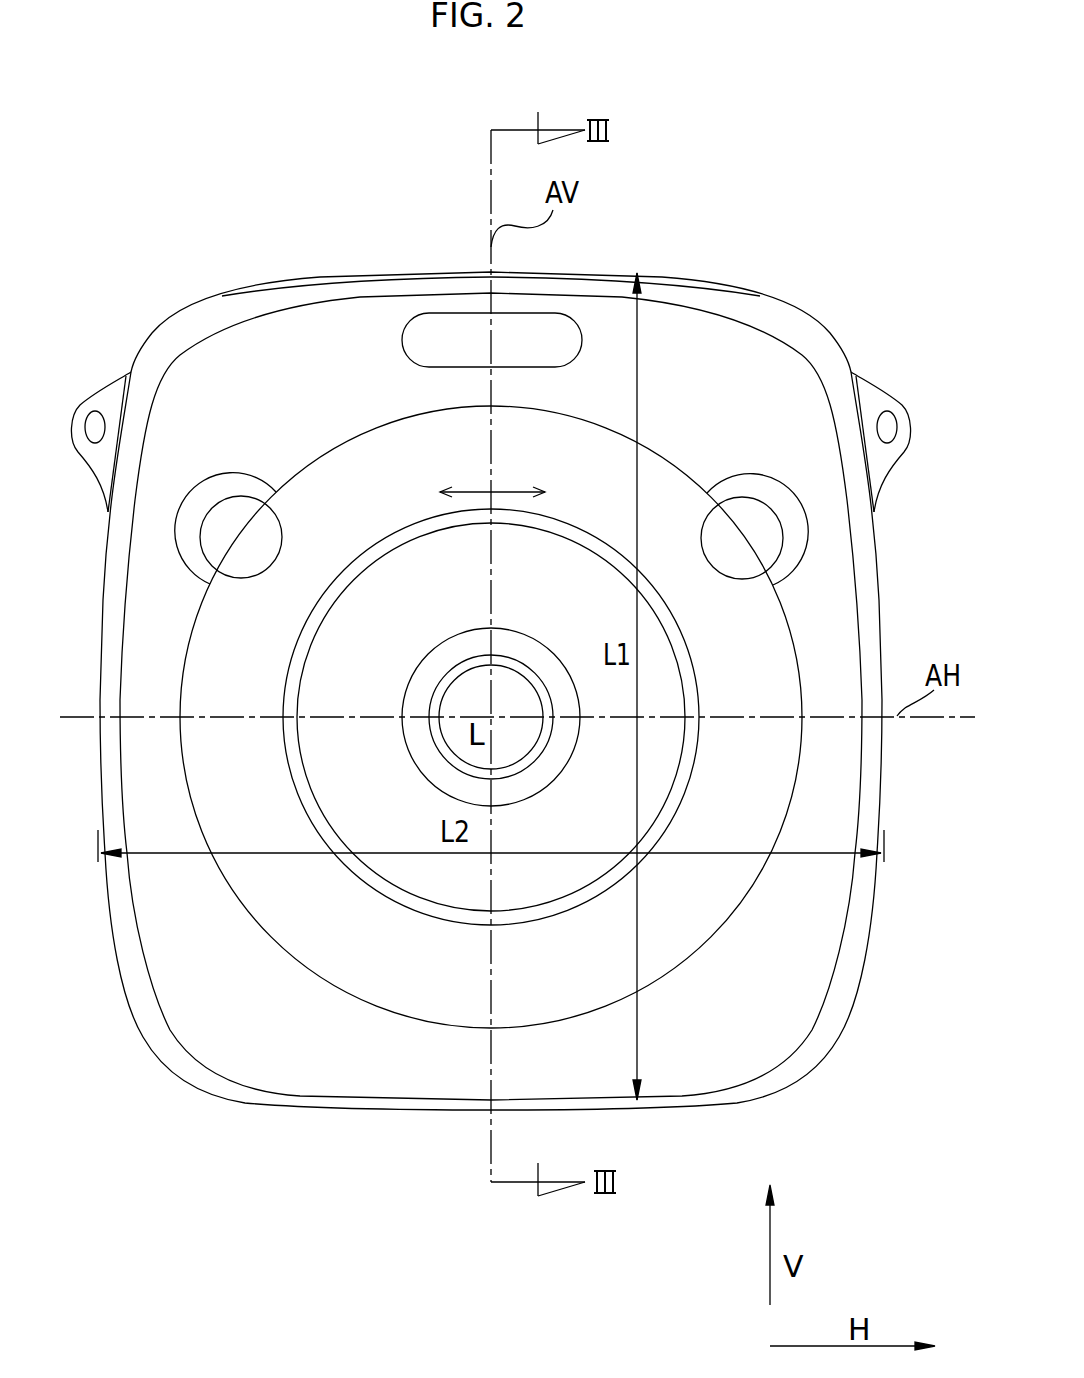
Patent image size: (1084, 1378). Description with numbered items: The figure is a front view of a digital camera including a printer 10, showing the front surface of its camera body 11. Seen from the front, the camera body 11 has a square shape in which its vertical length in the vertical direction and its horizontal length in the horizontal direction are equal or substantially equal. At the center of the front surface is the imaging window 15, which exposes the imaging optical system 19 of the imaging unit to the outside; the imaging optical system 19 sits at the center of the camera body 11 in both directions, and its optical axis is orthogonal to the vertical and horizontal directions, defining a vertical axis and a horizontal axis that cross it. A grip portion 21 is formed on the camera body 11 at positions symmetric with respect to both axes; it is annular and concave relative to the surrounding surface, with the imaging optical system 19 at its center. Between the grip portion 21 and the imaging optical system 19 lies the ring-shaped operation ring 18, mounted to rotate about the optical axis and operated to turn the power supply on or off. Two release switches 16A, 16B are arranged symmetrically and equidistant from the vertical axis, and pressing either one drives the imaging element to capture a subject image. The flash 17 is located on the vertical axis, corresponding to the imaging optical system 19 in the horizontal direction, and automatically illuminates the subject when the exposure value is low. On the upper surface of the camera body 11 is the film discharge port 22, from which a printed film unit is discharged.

The digital camera including a printer 10 is at (795, 176).
The camera body 11 is at (180, 300).
The imaging window 15 is at (512, 755).
The release switch 16A is at (204, 570).
The release switch 16B is at (782, 560).
The flash 17 is at (413, 338).
The operation ring 18 is at (437, 562).
The imaging optical system 19 is at (473, 690).
The grip portion 21 is at (357, 975).
The film discharge port 22 is at (283, 277).